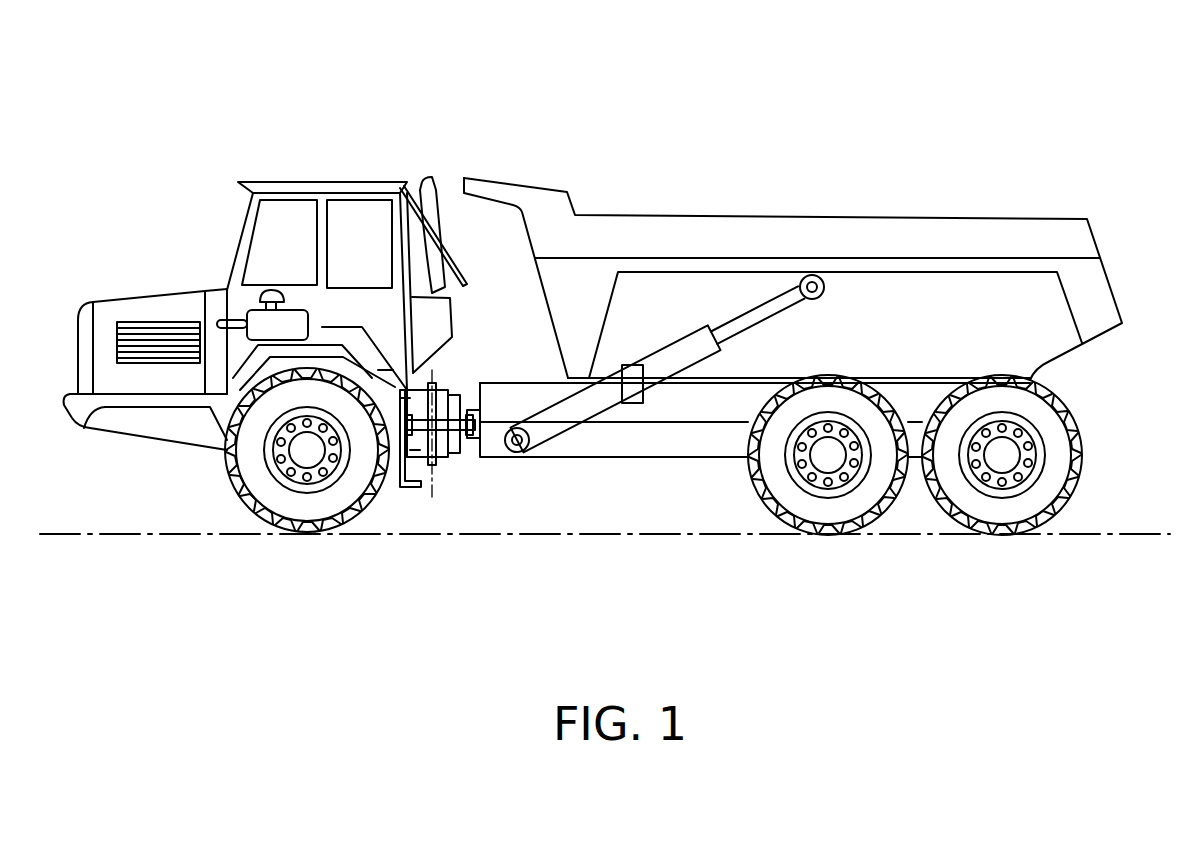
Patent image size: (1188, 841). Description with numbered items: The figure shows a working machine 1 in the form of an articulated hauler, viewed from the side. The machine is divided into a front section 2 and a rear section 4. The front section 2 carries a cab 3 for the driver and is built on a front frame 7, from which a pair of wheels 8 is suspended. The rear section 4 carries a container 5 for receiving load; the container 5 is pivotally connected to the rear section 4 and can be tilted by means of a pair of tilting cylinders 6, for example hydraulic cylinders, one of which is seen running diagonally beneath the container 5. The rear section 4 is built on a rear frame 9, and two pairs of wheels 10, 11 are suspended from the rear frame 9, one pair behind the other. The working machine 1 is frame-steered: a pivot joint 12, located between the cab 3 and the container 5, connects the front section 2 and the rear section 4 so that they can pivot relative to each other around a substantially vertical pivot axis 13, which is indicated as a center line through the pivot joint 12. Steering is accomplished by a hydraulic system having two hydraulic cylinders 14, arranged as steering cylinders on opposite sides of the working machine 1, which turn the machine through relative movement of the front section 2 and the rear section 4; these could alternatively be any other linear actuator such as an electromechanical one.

The working machine 1 is at (762, 75).
The front section 2 is at (237, 100).
The cab 3 is at (343, 190).
The rear section 4 is at (910, 168).
The container 5 is at (747, 237).
The tilting cylinders 6 is at (587, 402).
The front frame 7 is at (178, 425).
The wheels 8 is at (250, 483).
The rear frame 9 is at (588, 443).
The wheels 10 is at (880, 485).
The wheels 11 is at (1057, 485).
The pivot joint 12 is at (445, 437).
The pivot axis 13 is at (430, 486).
The hydraulic cylinders 14 is at (481, 446).